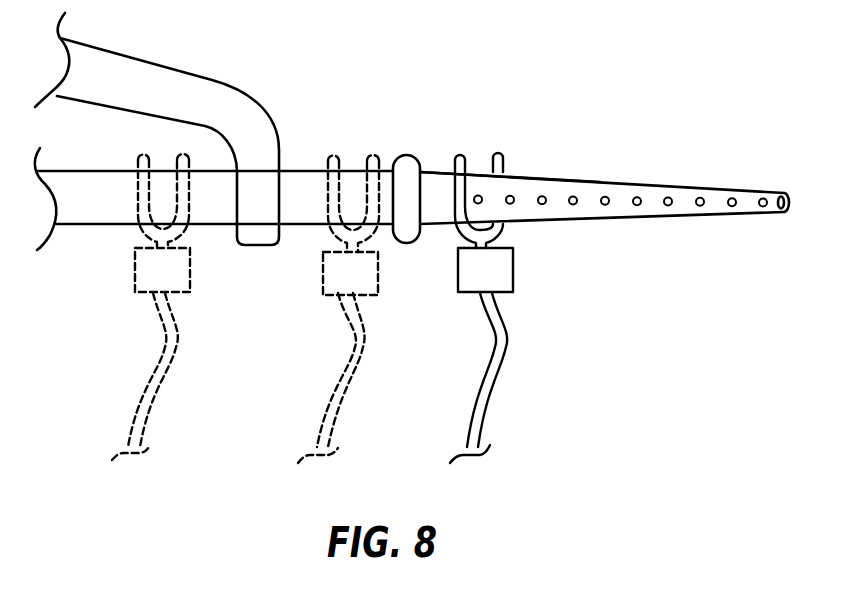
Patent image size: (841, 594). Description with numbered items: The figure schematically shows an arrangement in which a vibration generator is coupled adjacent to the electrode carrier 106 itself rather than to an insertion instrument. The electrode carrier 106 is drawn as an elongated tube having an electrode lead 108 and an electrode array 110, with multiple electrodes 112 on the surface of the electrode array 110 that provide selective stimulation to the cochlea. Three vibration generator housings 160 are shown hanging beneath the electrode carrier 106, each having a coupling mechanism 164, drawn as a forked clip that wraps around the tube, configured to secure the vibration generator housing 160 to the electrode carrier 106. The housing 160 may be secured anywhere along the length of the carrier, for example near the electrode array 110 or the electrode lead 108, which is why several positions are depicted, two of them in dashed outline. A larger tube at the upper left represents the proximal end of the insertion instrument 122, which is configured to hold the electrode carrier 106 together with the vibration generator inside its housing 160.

The electrode carrier 106 is at (85, 207).
The electrode lead 108 is at (382, 182).
The electrode array 110 is at (647, 181).
The electrodes 112 is at (605, 196).
The insertion instrument 122 is at (150, 78).
The vibration generator housing 160 is at (180, 272).
The coupling mechanism 164 is at (330, 203).